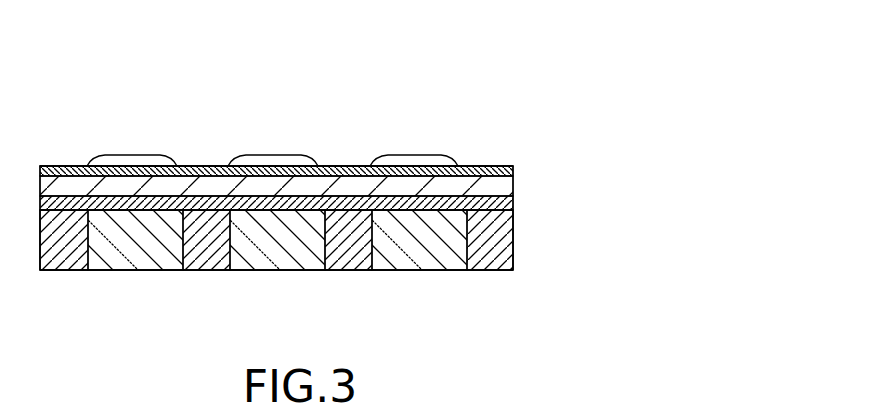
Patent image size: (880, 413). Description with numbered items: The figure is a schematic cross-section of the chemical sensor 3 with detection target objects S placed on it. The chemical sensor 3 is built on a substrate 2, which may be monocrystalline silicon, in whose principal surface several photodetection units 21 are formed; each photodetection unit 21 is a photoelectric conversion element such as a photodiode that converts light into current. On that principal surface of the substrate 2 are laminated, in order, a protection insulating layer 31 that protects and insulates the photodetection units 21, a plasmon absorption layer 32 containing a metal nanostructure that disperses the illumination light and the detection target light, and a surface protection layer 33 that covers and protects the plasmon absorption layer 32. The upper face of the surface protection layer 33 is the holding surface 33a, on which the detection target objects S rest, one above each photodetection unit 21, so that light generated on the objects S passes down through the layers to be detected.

The chemical sensor 3 is at (497, 80).
The substrate 2 is at (512, 240).
The photodetection unit 21 is at (132, 258).
The protection insulating layer 31 is at (512, 208).
The plasmon absorption layer 32 is at (512, 182).
The surface protection layer 33 is at (514, 170).
The holding surface 33a is at (345, 165).
The detection target object S is at (134, 160).